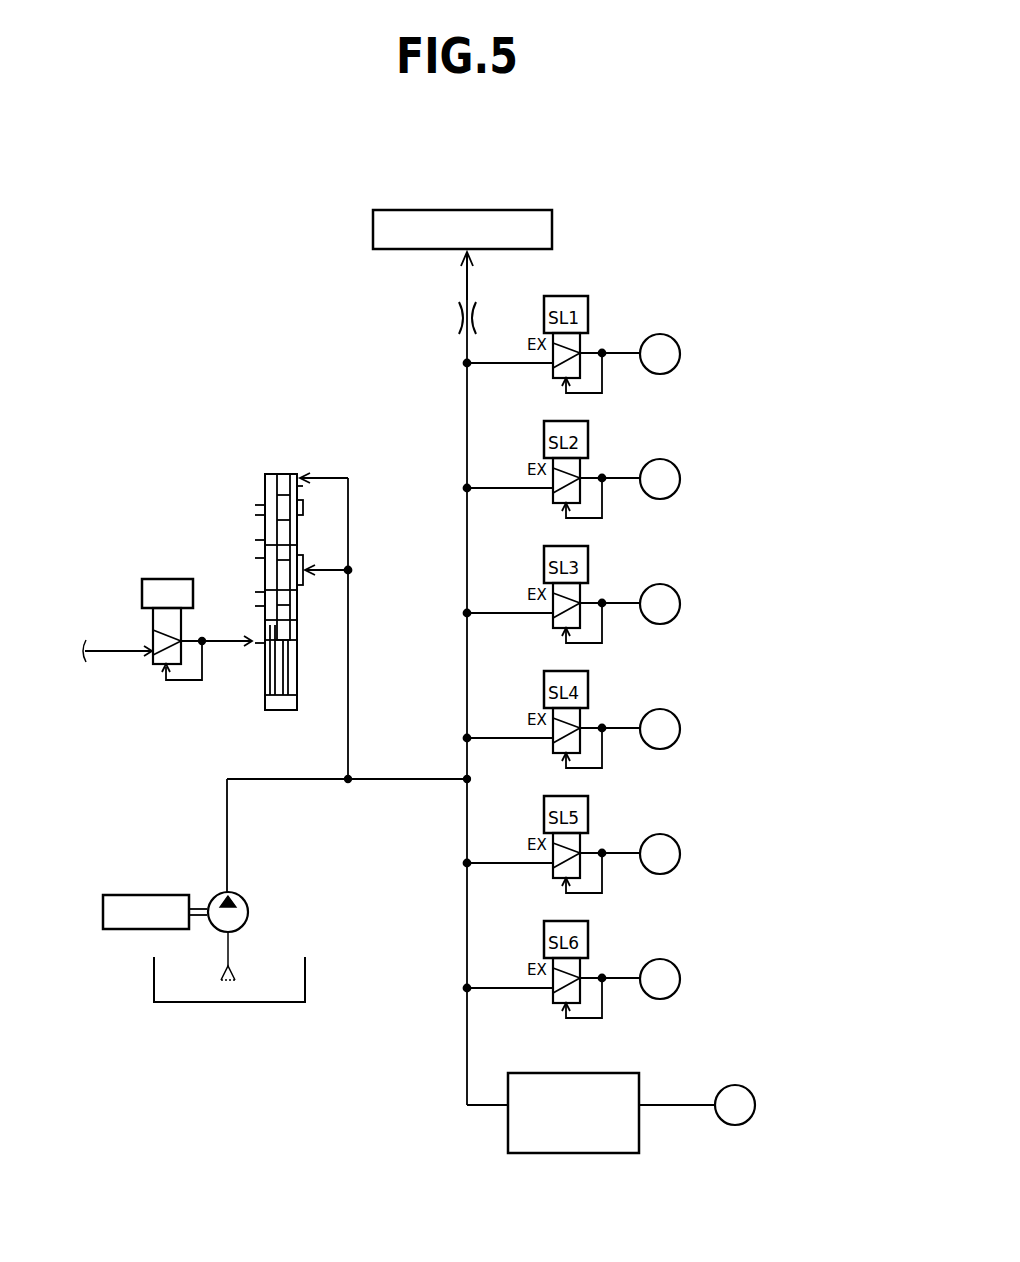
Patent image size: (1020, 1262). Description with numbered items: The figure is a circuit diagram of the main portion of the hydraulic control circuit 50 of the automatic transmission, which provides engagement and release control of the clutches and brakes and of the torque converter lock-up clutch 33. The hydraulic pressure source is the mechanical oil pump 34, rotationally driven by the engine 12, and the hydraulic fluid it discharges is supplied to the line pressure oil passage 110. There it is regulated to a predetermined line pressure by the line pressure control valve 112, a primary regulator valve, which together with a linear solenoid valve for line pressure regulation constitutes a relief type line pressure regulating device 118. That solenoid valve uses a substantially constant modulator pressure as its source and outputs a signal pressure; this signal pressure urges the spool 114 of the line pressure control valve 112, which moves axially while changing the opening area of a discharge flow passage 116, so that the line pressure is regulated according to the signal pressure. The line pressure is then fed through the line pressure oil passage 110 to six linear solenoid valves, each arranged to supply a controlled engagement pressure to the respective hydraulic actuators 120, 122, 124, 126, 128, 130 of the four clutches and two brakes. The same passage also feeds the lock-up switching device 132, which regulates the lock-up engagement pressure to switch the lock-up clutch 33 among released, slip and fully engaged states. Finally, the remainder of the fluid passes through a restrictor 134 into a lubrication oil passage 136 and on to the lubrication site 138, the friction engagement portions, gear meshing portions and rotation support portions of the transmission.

The hydraulic control circuit 50 is at (632, 224).
The lubrication site 138 is at (446, 210).
The lubrication oil passage 136 is at (465, 280).
The restrictor 134 is at (458, 327).
The hydraulic actuator 120 is at (663, 336).
The hydraulic actuator 122 is at (663, 461).
The hydraulic actuator 124 is at (663, 586).
The hydraulic actuator 126 is at (663, 711).
The hydraulic actuator 128 is at (663, 836).
The hydraulic actuator 130 is at (663, 961).
The lock-up switching device 132 is at (597, 1073).
The lock-up clutch 33 is at (738, 1102).
The line pressure oil passage 110 is at (419, 780).
The line pressure regulating device 118 is at (167, 428).
The line pressure control valve 112 is at (292, 591).
The spool 114 is at (264, 487).
The discharge flow passage 116 is at (300, 572).
The engine 12 is at (146, 896).
The oil pump 34 is at (213, 903).